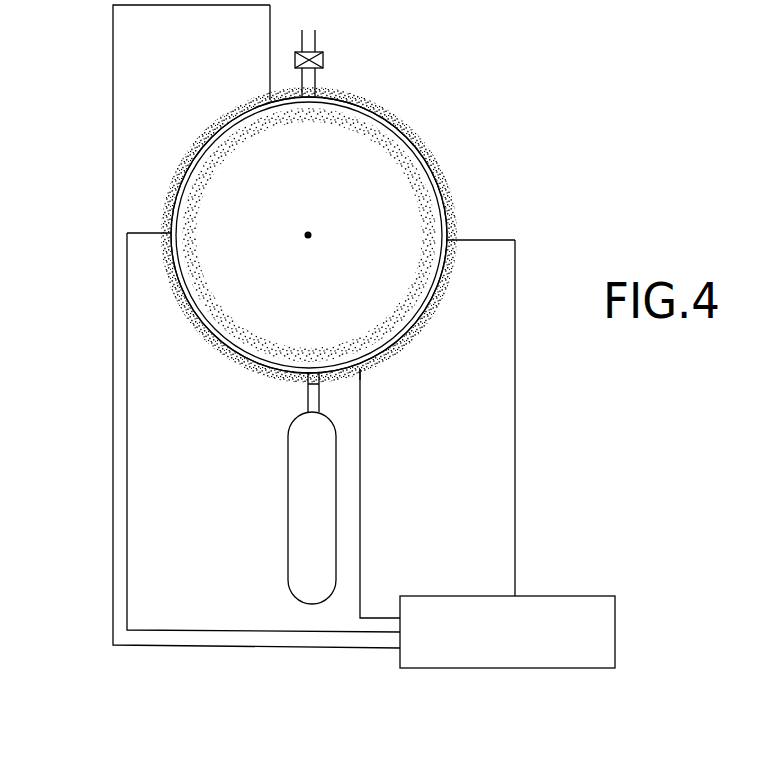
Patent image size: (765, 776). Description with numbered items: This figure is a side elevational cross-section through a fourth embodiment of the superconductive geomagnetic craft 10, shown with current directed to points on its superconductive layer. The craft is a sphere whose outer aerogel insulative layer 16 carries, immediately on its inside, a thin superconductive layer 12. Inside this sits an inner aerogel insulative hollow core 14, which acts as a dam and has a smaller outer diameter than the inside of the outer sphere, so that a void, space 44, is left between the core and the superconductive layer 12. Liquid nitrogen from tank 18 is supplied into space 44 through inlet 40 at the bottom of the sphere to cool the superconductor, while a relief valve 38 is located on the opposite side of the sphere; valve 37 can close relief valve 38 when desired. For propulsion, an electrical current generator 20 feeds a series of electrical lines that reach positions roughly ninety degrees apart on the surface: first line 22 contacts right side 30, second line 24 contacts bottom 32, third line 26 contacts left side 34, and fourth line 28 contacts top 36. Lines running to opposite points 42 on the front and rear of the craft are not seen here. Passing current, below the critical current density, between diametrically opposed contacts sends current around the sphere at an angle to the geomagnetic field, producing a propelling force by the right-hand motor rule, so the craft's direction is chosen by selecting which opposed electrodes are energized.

The superconductive geomagnetic craft 10 is at (358, 189).
The superconductive layer 12 is at (445, 200).
The inner aerogel insulative hollow core 14 is at (418, 193).
The outer aerogel insulative layer 16 is at (395, 112).
The liquid nitrogen tank 18 is at (300, 530).
The electrical current generator 20 is at (558, 596).
The first line 22 is at (515, 395).
The second line 24 is at (362, 497).
The third line 26 is at (128, 470).
The fourth line 28 is at (113, 342).
The right side of the sphere 30 is at (462, 238).
The bottom of the sphere 32 is at (378, 366).
The left side of the sphere 34 is at (168, 208).
The top of the sphere 36 is at (268, 95).
The valve 37 is at (318, 46).
The relief valve 38 is at (309, 83).
The inlet 40 is at (305, 378).
The opposite points 42 is at (306, 238).
The space 44 is at (432, 157).